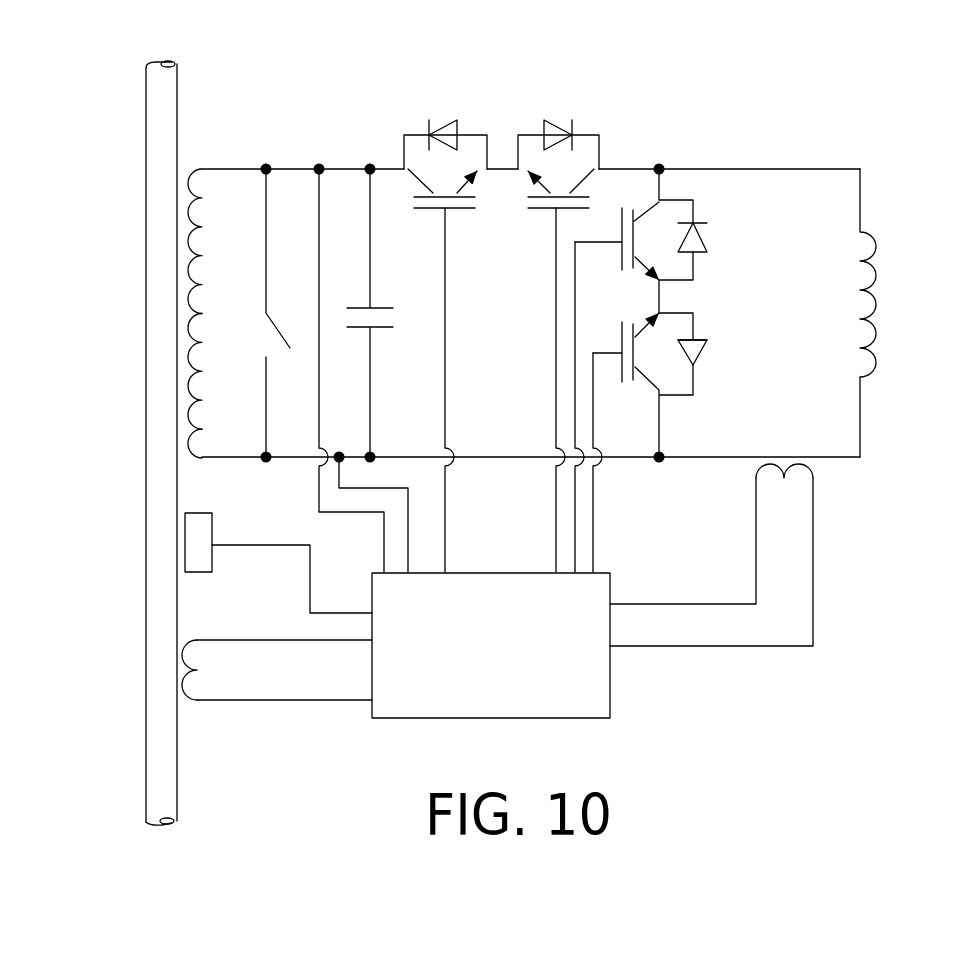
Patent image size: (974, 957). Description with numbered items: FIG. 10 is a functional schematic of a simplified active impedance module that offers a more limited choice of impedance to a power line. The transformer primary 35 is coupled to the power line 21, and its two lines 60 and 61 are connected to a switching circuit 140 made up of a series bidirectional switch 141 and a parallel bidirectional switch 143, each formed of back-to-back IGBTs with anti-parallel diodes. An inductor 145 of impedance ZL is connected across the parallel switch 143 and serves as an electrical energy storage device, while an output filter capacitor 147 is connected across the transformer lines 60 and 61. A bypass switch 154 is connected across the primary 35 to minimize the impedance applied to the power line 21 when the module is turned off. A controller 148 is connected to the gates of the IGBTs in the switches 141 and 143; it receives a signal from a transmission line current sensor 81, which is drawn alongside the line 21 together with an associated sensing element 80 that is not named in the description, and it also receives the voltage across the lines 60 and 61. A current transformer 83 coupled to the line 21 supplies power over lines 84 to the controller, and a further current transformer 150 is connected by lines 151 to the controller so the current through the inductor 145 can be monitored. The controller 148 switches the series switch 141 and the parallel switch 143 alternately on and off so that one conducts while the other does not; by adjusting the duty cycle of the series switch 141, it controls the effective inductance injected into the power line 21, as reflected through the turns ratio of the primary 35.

The power line 21 is at (177, 93).
The line 61 is at (202, 168).
The transformer primary 35 is at (201, 375).
The line 60 is at (195, 458).
The switching circuit 140 is at (703, 148).
The bypass switch 154 is at (292, 351).
The output filter capacitor 147 is at (375, 328).
The series bidirectional switch 141 is at (595, 127).
The parallel bidirectional switch 143 is at (703, 313).
The inductor 145 is at (878, 266).
The current transformer 150 is at (812, 466).
The lines 151 is at (757, 548).
The controller 148 is at (611, 678).
The sensor 80 is at (213, 545).
The transmission line current sensor 81 is at (212, 572).
The current transformer 83 is at (191, 700).
The lines 84 is at (268, 700).